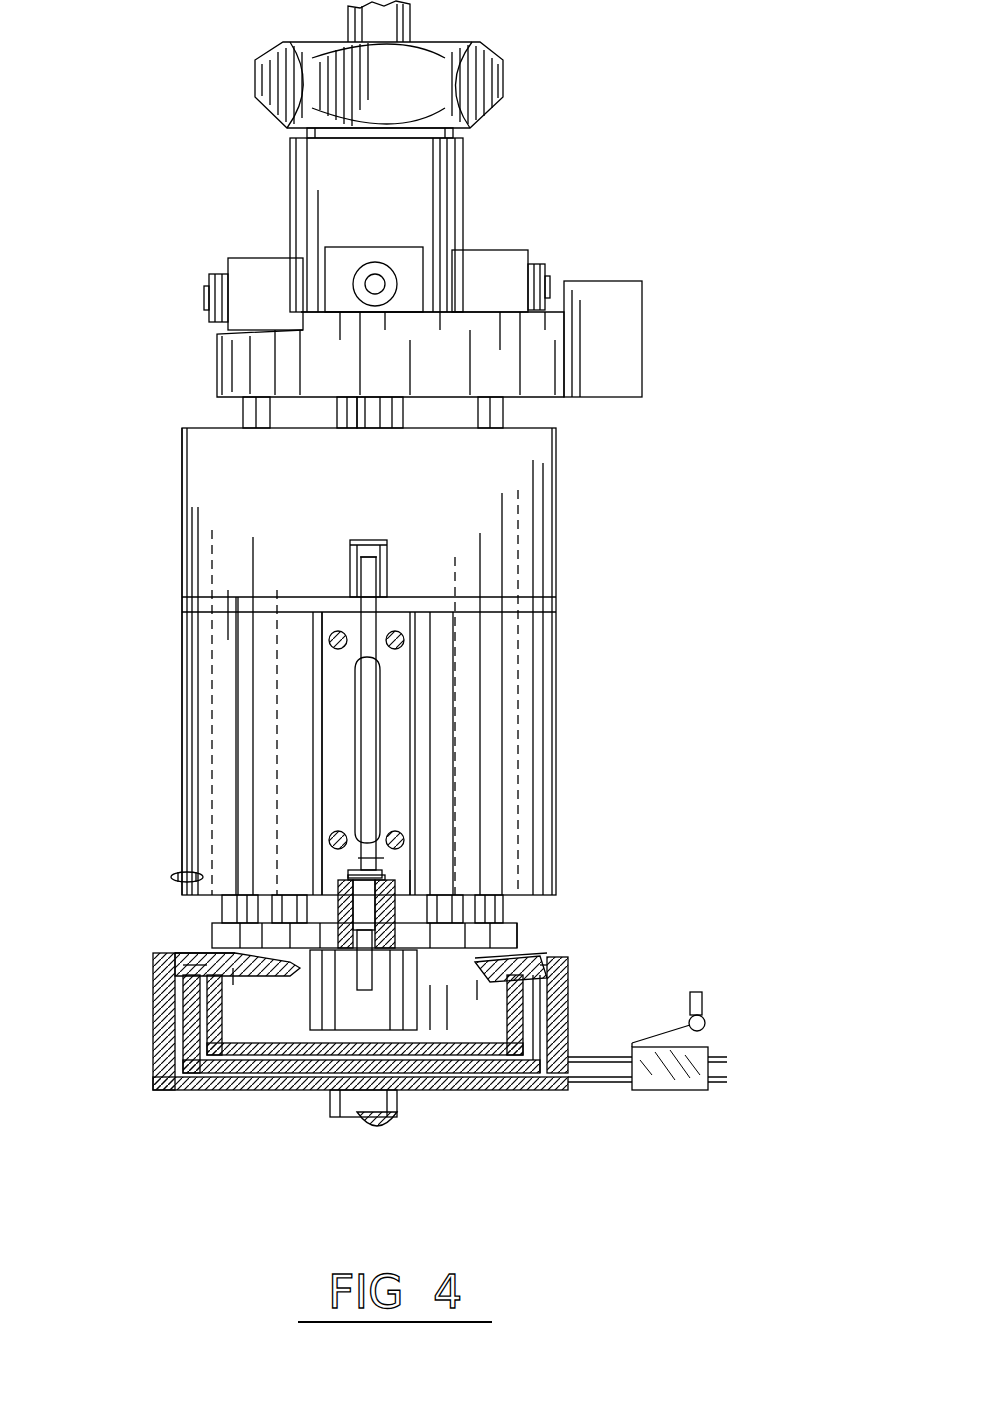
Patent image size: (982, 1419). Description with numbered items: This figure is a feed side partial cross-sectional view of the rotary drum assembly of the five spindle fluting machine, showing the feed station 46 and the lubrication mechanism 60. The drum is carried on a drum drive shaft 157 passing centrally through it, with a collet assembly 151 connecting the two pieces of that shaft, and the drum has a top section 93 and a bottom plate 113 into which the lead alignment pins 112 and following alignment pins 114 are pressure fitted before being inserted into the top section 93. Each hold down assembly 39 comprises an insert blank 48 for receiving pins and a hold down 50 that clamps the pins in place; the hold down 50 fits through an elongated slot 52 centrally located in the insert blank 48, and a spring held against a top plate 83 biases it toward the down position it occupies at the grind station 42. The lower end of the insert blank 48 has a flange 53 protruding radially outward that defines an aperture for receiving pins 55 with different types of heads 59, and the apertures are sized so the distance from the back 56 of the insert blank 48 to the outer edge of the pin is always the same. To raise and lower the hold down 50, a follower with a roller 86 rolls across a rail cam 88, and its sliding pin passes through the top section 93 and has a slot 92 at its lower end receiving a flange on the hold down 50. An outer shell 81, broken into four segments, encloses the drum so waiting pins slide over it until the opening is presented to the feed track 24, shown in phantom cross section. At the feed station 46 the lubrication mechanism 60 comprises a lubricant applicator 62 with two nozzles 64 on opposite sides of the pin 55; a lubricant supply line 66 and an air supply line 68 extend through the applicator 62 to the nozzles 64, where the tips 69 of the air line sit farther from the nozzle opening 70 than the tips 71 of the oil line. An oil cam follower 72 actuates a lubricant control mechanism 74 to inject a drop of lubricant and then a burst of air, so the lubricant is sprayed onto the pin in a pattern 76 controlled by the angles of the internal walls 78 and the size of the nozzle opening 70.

The collet assembly 151 is at (330, 178).
The roller 86 is at (394, 266).
The hold down assembly 39 is at (545, 238).
The rail cam 88 is at (608, 379).
The drum drive shaft 157 is at (412, 414).
The nozzles 64 is at (503, 420).
The top section 93 is at (205, 492).
The outer shell 81 is at (263, 677).
The insert blank 48 is at (397, 800).
The elongated slot 52 is at (410, 775).
The top plate 83 is at (400, 603).
The slot 92 is at (387, 558).
The hold down 50 is at (365, 746).
The heads 59 is at (358, 868).
The grind station 42 is at (187, 818).
The back 56 is at (367, 867).
The feed station 46 is at (433, 883).
The flange 53 is at (335, 947).
The feed track 24 is at (215, 928).
The bottom plate 113 is at (517, 927).
The tips of the oil line 71 is at (213, 977).
The air supply line 68 is at (158, 1010).
The lubricant supply line 66 is at (183, 1040).
The spray pattern 76 is at (302, 1060).
The lubricant applicator 62 is at (570, 992).
The internal walls 78 is at (530, 970).
The tips of the air line 69 is at (197, 973).
The nozzle opening 70 is at (245, 968).
The pin 55 is at (340, 953).
The following alignment pins 114 is at (432, 985).
The lead alignment pins 112 is at (450, 988).
The lubricant control mechanism 74 is at (660, 1092).
The oil cam follower 72 is at (705, 1018).
The lubrication mechanism 60 is at (650, 1005).